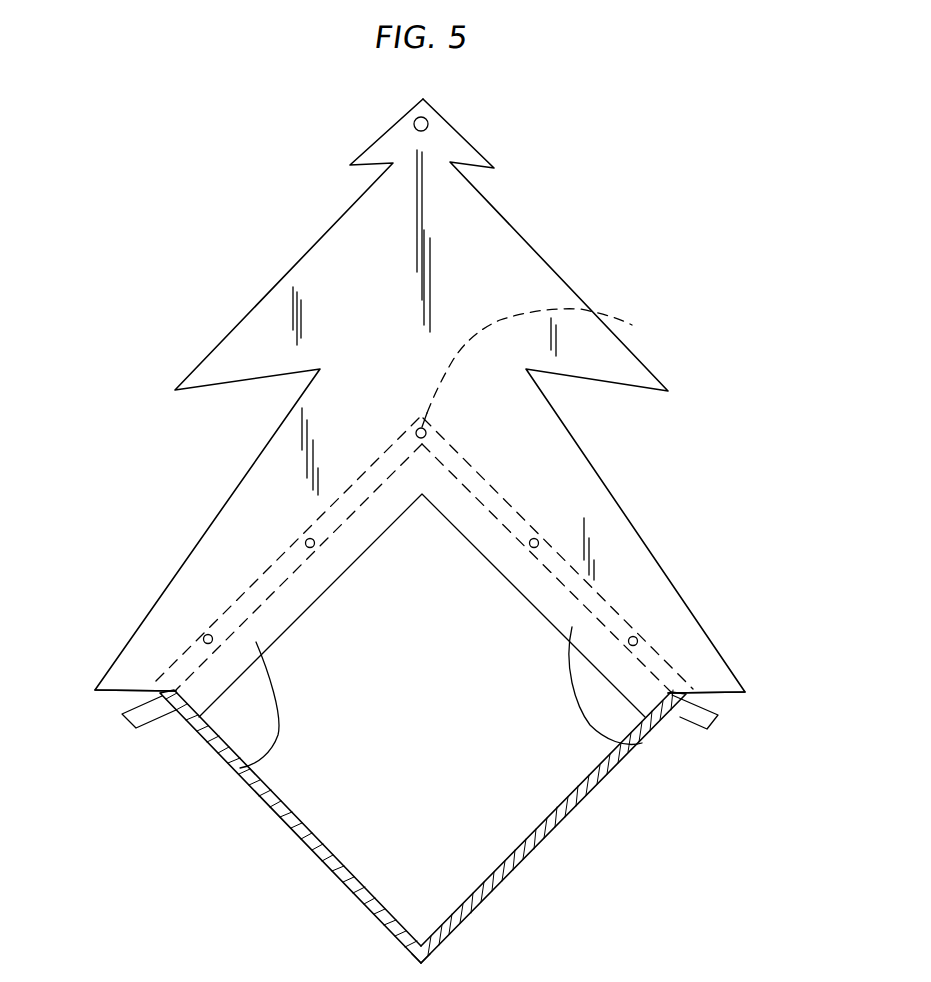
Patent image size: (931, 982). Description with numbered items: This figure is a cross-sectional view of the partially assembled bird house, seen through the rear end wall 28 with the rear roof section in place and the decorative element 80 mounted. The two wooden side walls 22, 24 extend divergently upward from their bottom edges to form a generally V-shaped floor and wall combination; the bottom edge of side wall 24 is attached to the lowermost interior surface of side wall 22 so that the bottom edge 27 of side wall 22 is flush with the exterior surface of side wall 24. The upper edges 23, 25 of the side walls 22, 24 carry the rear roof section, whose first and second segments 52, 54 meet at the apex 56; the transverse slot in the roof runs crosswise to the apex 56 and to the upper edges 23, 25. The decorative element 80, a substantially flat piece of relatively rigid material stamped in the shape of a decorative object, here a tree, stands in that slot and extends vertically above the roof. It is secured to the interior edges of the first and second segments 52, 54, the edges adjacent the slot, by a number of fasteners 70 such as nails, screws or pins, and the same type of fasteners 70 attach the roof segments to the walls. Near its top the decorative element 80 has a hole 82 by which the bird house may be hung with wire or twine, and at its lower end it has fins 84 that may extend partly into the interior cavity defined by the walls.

The decorative element 80 is at (506, 262).
The hole 82 is at (429, 124).
The apex 56 is at (547, 361).
The fasteners 70 is at (426, 435).
The upper edge 23 is at (166, 690).
The upper edge 25 is at (688, 694).
The first segment 52 is at (134, 707).
The second segment 54 is at (718, 722).
The end wall 28 is at (434, 733).
The side wall 22 is at (307, 845).
The side wall 24 is at (553, 830).
The bottom edge 27 is at (422, 963).
The fins 84 is at (240, 768).